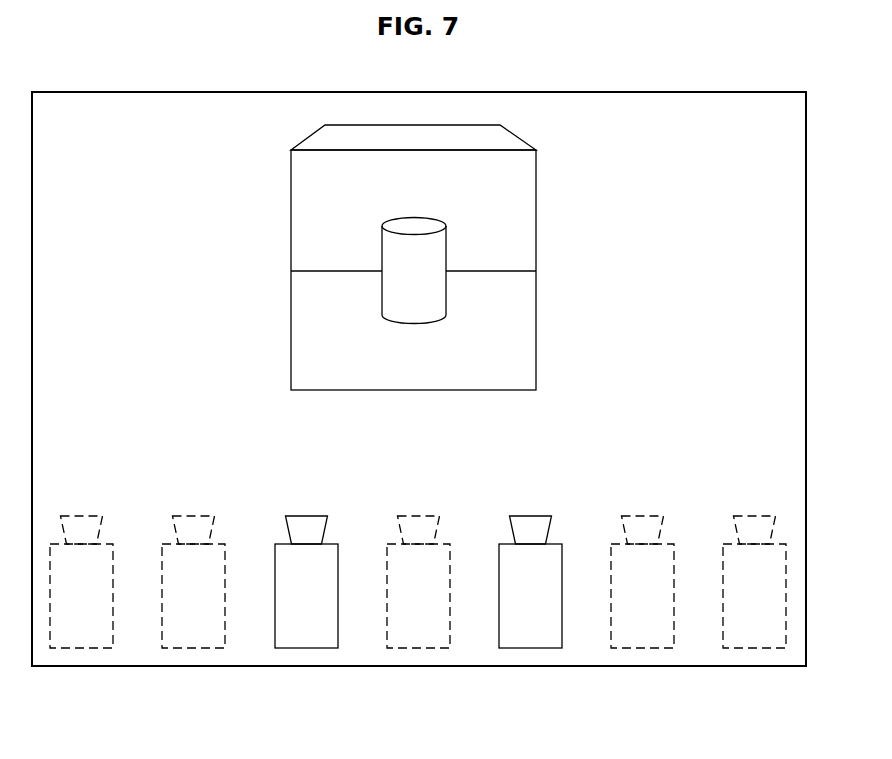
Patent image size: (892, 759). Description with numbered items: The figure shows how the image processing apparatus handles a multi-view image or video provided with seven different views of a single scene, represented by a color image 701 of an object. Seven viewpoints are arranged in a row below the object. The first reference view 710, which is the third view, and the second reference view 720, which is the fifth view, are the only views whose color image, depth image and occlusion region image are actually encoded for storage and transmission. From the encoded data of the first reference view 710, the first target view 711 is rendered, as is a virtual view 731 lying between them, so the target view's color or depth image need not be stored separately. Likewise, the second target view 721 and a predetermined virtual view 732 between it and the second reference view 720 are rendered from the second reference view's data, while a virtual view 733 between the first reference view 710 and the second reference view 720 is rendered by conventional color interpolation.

The color image 701 is at (536, 169).
The first reference view 710 is at (305, 516).
The second reference view 720 is at (528, 516).
The first target view 711 is at (80, 516).
The second target view 721 is at (752, 516).
The virtual view 731 is at (193, 648).
The virtual view 732 is at (642, 648).
The virtual view 733 is at (420, 648).